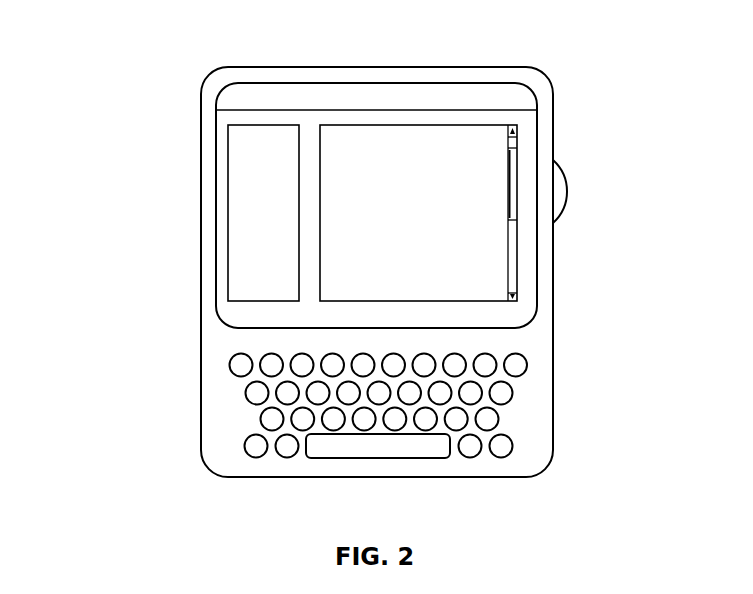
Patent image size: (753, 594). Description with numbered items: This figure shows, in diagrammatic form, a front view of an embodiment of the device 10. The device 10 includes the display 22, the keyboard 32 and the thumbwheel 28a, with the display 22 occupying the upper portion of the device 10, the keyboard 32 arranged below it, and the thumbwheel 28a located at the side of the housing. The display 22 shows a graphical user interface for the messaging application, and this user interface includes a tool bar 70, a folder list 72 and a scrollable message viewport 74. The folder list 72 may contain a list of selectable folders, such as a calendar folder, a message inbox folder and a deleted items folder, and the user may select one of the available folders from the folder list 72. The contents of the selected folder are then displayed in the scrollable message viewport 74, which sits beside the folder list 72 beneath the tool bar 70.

The device 10 is at (167, 42).
The display 22 is at (213, 333).
The thumbwheel 28a is at (566, 205).
The tool bar 70 is at (455, 97).
The folder list 72 is at (240, 205).
The scrollable message viewport 74 is at (475, 170).
The keyboard 32 is at (529, 420).